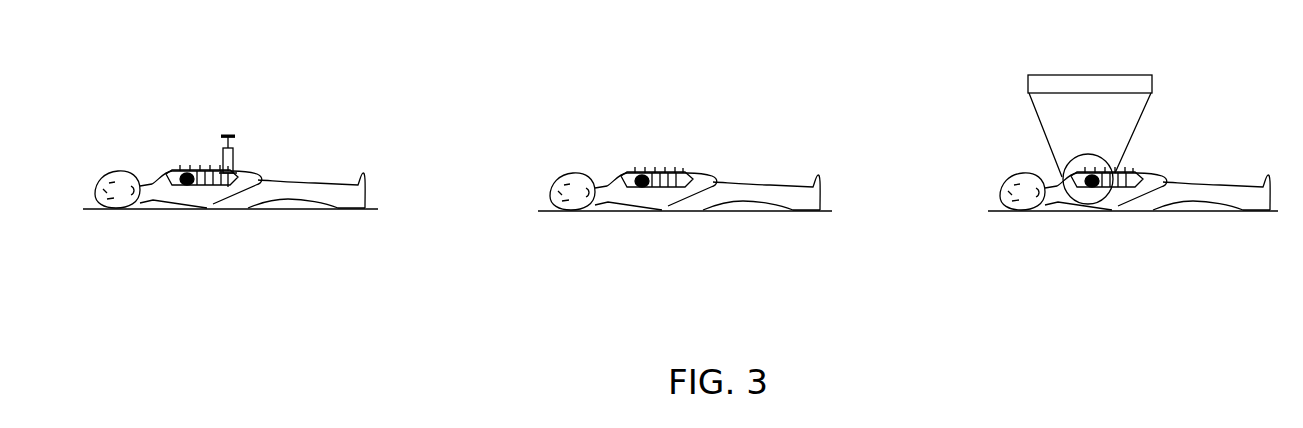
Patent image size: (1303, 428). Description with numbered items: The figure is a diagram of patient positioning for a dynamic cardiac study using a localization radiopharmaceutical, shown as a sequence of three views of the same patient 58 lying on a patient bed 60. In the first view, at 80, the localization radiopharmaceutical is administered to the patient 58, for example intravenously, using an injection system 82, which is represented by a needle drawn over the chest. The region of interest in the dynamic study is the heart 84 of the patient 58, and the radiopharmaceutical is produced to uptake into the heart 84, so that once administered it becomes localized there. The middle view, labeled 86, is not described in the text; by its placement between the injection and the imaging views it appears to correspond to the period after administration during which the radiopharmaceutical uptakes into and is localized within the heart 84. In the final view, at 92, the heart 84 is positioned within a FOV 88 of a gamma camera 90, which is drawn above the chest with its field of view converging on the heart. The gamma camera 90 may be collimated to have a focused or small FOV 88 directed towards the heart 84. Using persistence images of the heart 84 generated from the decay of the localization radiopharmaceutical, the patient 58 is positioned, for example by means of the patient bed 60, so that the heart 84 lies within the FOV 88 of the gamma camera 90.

The patient 58 is at (310, 181).
The patient bed 60 is at (293, 212).
The administration of localization radiopharmaceutical 80 is at (192, 242).
The injection system 82 is at (233, 153).
The heart 84 is at (185, 170).
The second step arrangement (waiting) 86 is at (650, 244).
The FOV 88 is at (1038, 119).
The gamma camera 90 is at (1090, 74).
The positioning of heart within FOV 92 is at (1156, 247).